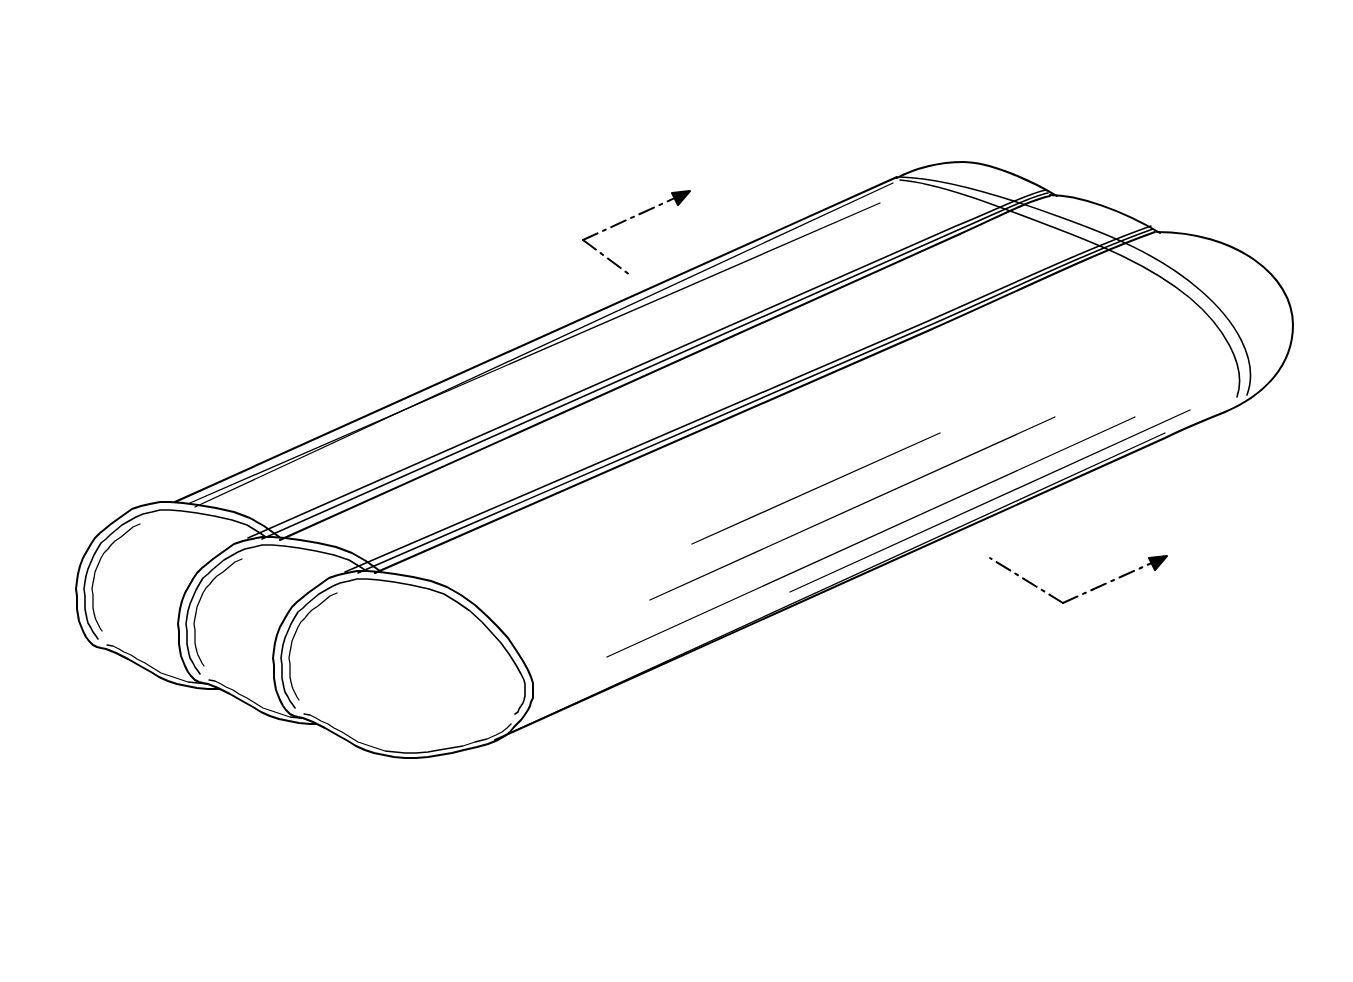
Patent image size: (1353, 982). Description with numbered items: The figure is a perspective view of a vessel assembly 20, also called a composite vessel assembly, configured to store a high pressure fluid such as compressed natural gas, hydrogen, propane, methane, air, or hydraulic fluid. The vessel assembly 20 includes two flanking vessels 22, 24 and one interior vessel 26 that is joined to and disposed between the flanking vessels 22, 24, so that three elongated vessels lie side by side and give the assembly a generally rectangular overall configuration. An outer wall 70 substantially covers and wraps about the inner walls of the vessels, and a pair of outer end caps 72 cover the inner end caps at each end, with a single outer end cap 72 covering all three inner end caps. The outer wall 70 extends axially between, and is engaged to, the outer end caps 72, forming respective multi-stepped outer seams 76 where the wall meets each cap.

The vessel assembly 20 is at (1186, 160).
The flanking vessel 22 is at (456, 374).
The flanking vessel 24 is at (843, 583).
The interior vessel 26 is at (238, 703).
The outer wall 70 is at (667, 633).
The outer end cap 72 is at (1246, 252).
The seam 76 is at (897, 176).